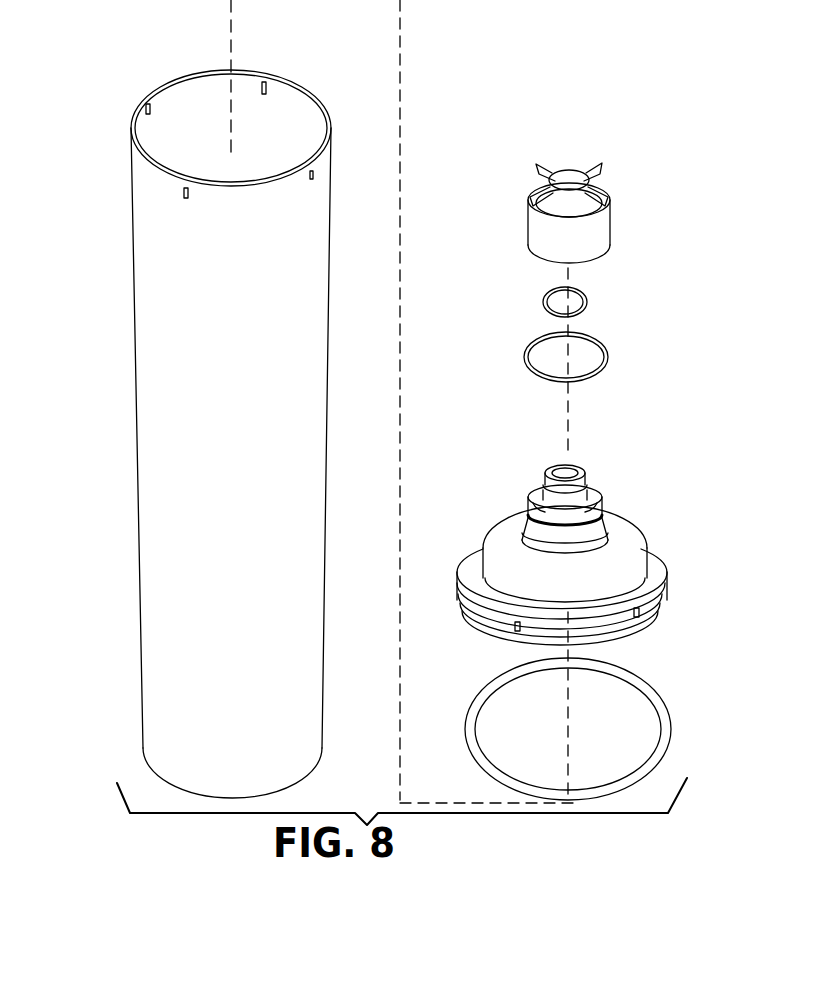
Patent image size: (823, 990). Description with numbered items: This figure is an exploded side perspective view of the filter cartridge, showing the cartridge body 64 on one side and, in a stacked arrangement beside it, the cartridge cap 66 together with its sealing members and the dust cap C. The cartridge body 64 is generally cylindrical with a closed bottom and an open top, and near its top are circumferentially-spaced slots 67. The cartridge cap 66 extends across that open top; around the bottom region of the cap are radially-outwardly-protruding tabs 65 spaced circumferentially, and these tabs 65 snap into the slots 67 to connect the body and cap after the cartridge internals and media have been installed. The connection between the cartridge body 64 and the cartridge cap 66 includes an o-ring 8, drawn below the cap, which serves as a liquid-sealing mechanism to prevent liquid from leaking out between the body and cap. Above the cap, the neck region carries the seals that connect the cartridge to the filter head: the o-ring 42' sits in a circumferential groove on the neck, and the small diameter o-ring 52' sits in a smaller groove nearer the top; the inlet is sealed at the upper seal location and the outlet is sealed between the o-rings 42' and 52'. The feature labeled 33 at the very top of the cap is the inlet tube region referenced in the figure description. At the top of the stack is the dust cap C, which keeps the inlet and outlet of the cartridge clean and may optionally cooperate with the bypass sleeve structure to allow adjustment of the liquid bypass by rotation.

The cartridge body 64 is at (185, 368).
The slots 67 is at (266, 82).
The dust cap C is at (606, 190).
The small diameter o-ring 52' is at (524, 293).
The o-ring 42' is at (529, 357).
The spout / outlet 33 is at (570, 471).
The cartridge cap 66 is at (508, 535).
The tabs 65 is at (520, 628).
The o-ring 8 is at (468, 750).